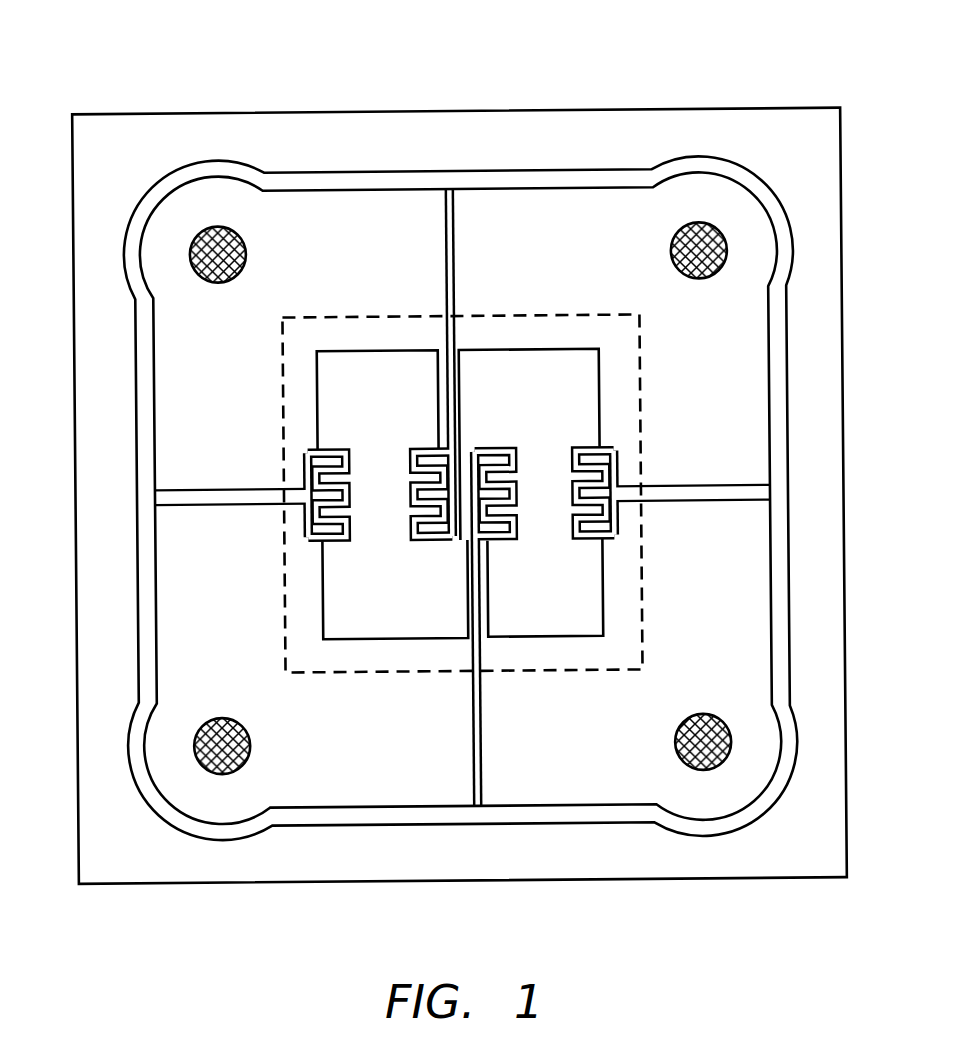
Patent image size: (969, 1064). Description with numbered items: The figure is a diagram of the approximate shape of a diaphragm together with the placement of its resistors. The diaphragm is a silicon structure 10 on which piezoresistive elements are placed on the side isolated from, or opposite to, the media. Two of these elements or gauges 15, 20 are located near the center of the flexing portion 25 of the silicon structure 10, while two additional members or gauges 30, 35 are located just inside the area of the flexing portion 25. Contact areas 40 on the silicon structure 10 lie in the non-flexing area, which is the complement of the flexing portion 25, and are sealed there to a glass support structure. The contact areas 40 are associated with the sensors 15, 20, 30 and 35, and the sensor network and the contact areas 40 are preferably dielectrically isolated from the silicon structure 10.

The silicon structure 10 is at (762, 80).
The piezoresistive gauge 15 is at (483, 448).
The piezoresistive gauge 20 is at (425, 448).
The flexing portion 25 is at (640, 460).
The piezoresistive gauge 30 is at (592, 542).
The piezoresistive gauge 35 is at (325, 543).
The contact area 40 is at (202, 200).